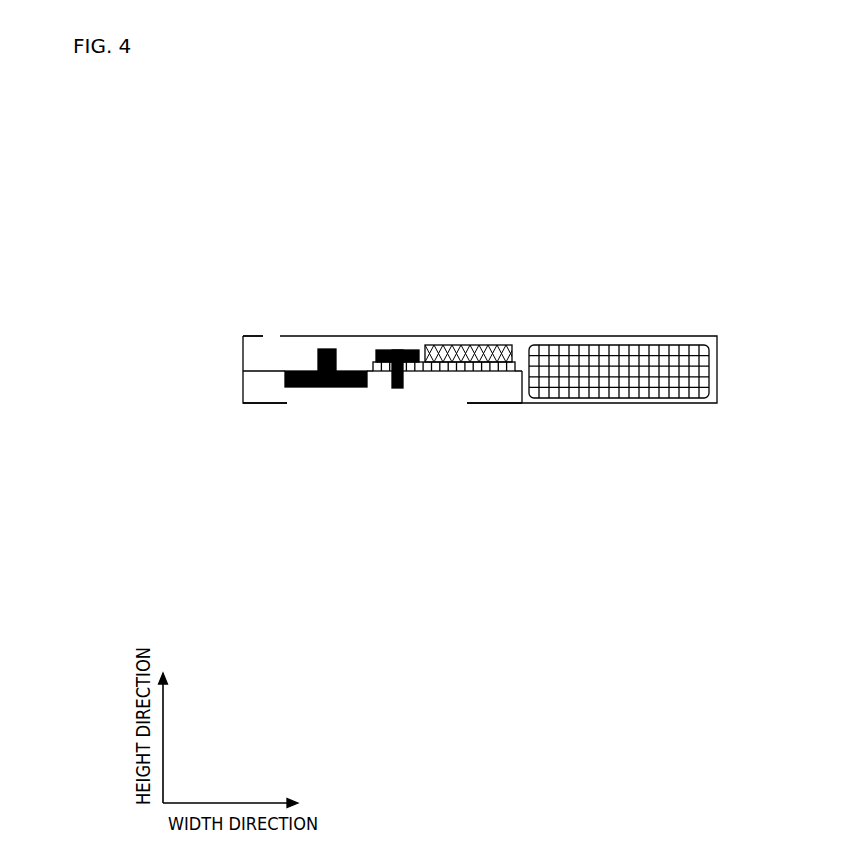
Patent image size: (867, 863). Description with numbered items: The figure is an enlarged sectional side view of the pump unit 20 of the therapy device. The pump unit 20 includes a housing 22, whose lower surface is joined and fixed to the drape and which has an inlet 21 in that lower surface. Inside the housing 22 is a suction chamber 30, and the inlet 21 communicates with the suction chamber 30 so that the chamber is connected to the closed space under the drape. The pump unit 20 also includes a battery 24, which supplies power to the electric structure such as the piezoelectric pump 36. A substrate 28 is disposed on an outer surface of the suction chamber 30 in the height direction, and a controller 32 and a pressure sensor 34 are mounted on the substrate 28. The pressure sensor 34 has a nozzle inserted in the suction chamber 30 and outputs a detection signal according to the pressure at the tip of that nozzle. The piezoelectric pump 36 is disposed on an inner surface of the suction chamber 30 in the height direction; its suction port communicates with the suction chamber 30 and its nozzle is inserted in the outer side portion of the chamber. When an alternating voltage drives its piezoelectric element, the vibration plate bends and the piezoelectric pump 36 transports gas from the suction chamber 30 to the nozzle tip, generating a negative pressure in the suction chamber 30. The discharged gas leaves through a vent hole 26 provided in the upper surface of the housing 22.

The pump unit 20 is at (672, 172).
The inlet 21 is at (375, 413).
The housing 22 is at (693, 334).
The battery 24 is at (612, 360).
The vent hole 26 is at (274, 326).
The substrate 28 is at (516, 361).
The suction chamber 30 is at (482, 388).
The controller 32 is at (470, 345).
The pressure sensor 34 is at (410, 349).
The piezoelectric pump 36 is at (338, 349).